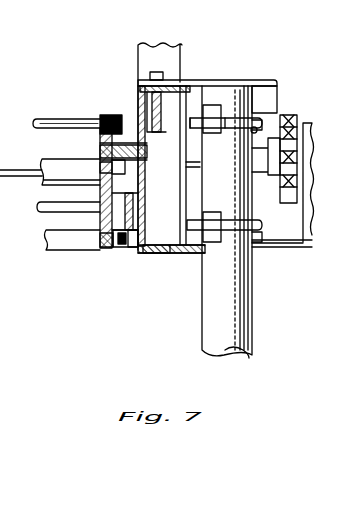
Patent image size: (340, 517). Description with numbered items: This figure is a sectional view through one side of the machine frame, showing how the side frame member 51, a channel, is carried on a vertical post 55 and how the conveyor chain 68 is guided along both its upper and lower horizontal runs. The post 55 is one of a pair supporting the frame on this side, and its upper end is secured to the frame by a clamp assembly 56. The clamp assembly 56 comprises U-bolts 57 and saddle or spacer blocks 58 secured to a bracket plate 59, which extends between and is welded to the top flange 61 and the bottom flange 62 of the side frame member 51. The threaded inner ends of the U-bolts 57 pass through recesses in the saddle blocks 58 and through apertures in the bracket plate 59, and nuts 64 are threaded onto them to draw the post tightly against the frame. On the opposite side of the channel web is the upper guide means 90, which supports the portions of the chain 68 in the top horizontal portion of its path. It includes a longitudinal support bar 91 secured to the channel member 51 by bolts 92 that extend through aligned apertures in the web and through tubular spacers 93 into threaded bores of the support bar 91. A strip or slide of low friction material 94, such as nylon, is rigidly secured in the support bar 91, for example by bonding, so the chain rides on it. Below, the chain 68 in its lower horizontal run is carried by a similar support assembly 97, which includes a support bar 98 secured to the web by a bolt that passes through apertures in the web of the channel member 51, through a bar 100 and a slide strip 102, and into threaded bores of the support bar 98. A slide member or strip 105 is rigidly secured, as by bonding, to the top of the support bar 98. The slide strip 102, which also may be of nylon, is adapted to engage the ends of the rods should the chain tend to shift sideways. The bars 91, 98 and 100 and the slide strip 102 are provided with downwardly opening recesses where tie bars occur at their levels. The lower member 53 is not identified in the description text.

The side frame member 51 is at (138, 90).
The top flange 61 is at (190, 77).
The nut 64 is at (182, 110).
The bolt 92 is at (159, 152).
The bracket plate 59 is at (182, 194).
The vertical post 55 is at (240, 279).
The saddle or spacer block 58 is at (212, 108).
The U-bolt 57 is at (232, 130).
The clamp assembly 56 is at (266, 95).
The upper guide means 90 is at (88, 149).
The low friction strip or slide 94 is at (100, 122).
The chain 68 is at (115, 117).
The longitudinal support bar 91 is at (100, 167).
The tubular spacer 93 is at (123, 164).
The slide member or strip 105 is at (100, 216).
The arm 53 is at (50, 252).
The support assembly 97 is at (98, 254).
The support bar 98 is at (116, 248).
The slide strip 102 is at (134, 248).
The bar 100 is at (145, 253).
The bottom flange 62 is at (173, 254).